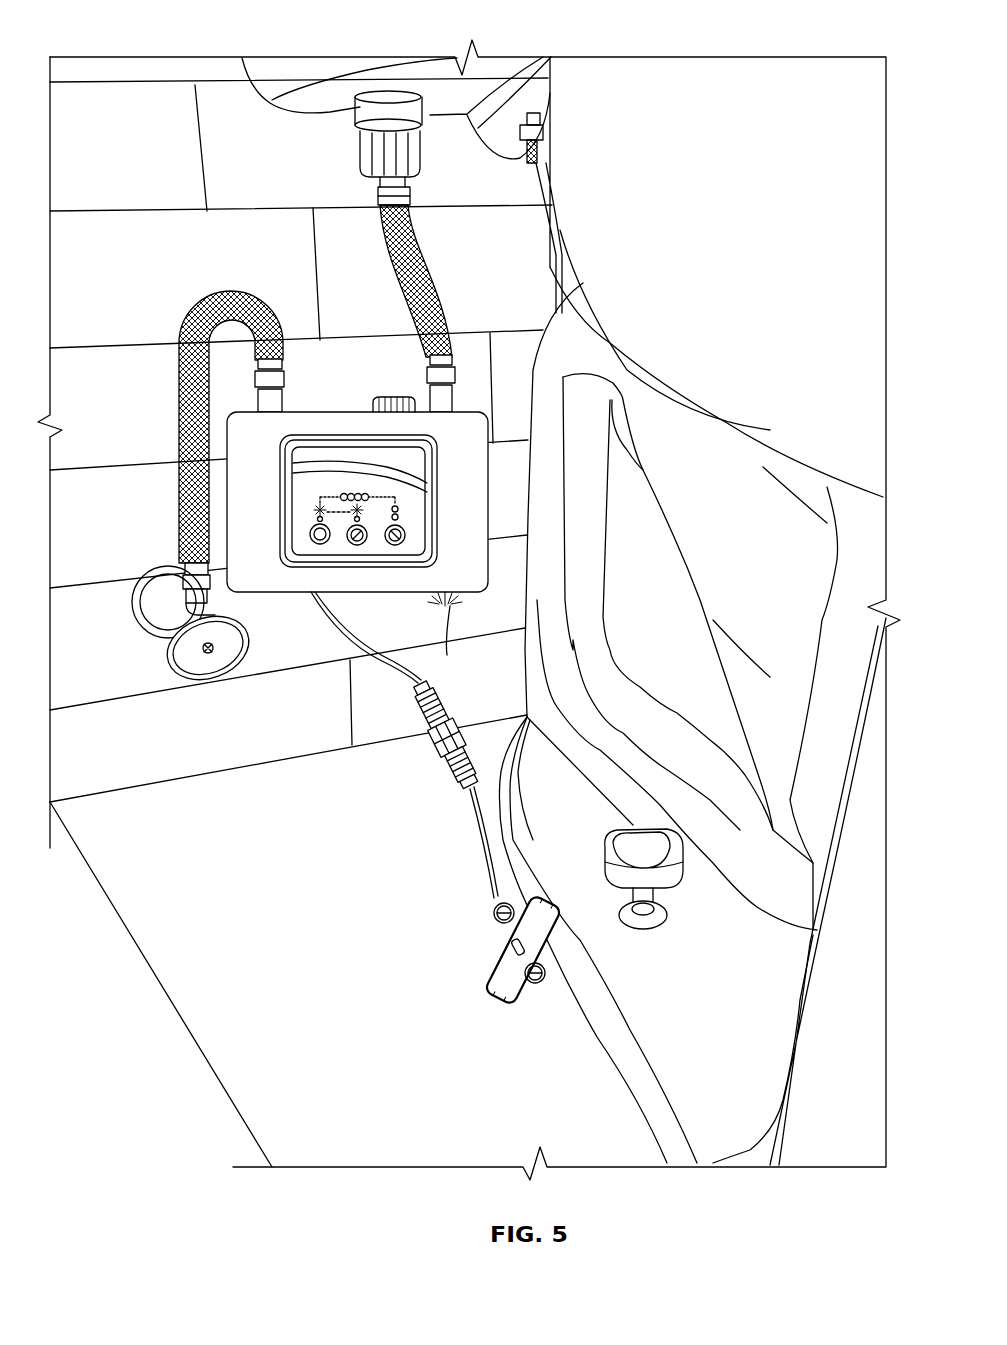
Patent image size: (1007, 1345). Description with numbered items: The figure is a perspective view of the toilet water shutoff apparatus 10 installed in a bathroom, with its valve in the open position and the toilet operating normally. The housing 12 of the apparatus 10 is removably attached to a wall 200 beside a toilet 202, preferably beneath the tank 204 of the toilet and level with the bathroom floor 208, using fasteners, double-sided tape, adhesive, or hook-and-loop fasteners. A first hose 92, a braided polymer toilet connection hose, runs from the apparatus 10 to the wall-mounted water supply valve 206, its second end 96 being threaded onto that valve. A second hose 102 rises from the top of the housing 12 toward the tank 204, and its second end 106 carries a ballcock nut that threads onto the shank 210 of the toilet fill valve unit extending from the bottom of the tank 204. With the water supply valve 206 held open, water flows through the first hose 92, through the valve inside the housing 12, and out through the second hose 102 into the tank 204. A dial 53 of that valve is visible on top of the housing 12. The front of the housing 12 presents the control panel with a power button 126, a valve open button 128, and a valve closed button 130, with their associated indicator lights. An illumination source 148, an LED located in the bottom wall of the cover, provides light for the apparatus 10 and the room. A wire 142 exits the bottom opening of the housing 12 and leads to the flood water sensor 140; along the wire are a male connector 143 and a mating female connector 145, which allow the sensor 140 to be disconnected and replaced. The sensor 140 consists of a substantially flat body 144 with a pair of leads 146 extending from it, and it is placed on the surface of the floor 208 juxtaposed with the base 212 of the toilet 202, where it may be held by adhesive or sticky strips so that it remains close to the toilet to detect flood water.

The apparatus 10 is at (323, 407).
The housing 12 is at (258, 572).
The dial 53 is at (380, 398).
The first hose 92 is at (178, 395).
The second end of the first hose 96 is at (193, 578).
The second hose 102 is at (417, 257).
The second end of the second hose 106 is at (407, 193).
The power button 126 is at (312, 538).
The valve open button 128 is at (357, 548).
The valve closed button 130 is at (398, 548).
The flood water sensor 140 is at (507, 947).
The wire 142 is at (490, 877).
The male connector 143 is at (453, 777).
The body 144 is at (550, 993).
The female connector 145 is at (422, 693).
The leads 146 is at (500, 912).
The illumination source 148 is at (448, 638).
The wall 200 is at (125, 505).
The toilet 202 is at (622, 630).
The tank 204 is at (275, 70).
The water supply valve 206 is at (147, 617).
The bathroom floor 208 is at (180, 968).
The shank 210 is at (400, 123).
The base 212 is at (598, 1017).